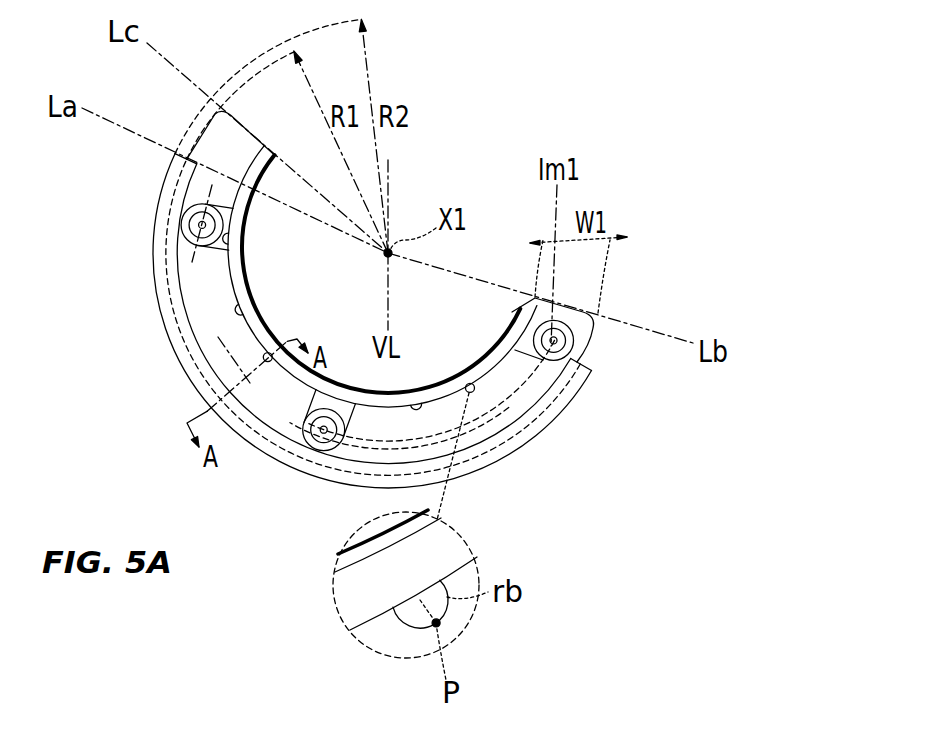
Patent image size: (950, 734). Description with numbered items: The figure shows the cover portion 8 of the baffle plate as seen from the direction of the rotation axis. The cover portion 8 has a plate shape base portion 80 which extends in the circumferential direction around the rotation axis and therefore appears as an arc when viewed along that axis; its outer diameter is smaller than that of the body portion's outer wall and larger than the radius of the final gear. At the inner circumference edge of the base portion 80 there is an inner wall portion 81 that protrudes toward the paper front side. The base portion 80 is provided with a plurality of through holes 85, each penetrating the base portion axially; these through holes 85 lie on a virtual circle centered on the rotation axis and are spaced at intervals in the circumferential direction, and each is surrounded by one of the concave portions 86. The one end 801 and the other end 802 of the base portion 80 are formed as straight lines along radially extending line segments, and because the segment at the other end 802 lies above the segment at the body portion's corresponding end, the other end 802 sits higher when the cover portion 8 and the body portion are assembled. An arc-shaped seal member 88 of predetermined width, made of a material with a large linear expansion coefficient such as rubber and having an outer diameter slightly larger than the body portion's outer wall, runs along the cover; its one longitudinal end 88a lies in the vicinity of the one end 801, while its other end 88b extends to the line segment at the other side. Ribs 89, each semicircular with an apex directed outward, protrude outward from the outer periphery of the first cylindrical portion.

The cover portion 8 is at (548, 104).
The base portion 80 is at (203, 143).
The inner wall portion 81 is at (247, 272).
The through holes 85 is at (553, 341).
The concave portions 86 is at (346, 423).
The seal member 88 is at (173, 337).
The one longitudinal end of the seal member 88a is at (587, 376).
The other end of the seal member 88b is at (170, 162).
The ribs 89 is at (271, 353).
The one end of the base portion 801 is at (570, 307).
The other end of the base portion 802 is at (248, 130).